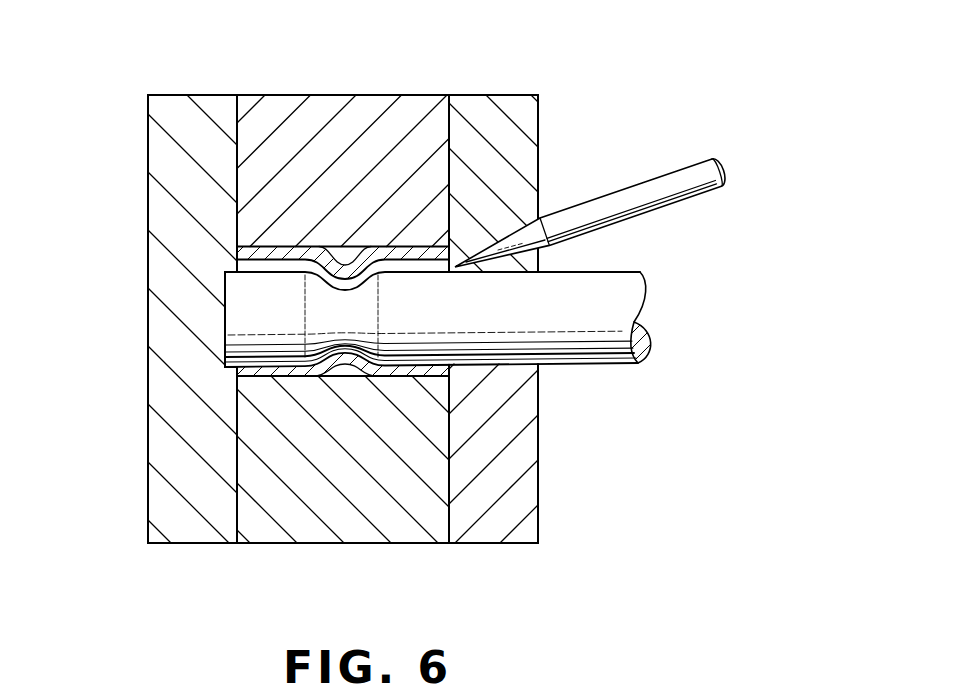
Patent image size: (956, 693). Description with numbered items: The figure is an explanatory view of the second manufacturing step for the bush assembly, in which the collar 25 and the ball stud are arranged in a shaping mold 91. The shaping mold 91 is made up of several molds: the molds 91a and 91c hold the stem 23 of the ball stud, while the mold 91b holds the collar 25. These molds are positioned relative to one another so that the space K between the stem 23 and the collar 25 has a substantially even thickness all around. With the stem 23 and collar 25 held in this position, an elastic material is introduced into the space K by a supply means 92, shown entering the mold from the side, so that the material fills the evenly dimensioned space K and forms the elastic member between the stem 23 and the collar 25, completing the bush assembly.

The shaping mold 91 is at (398, 328).
The mold 91a is at (193, 528).
The mold 91b is at (357, 533).
The mold 91c is at (490, 532).
The supply means 92 is at (617, 195).
The stem 23 is at (595, 350).
The collar 25 is at (263, 385).
The space K is at (250, 265).